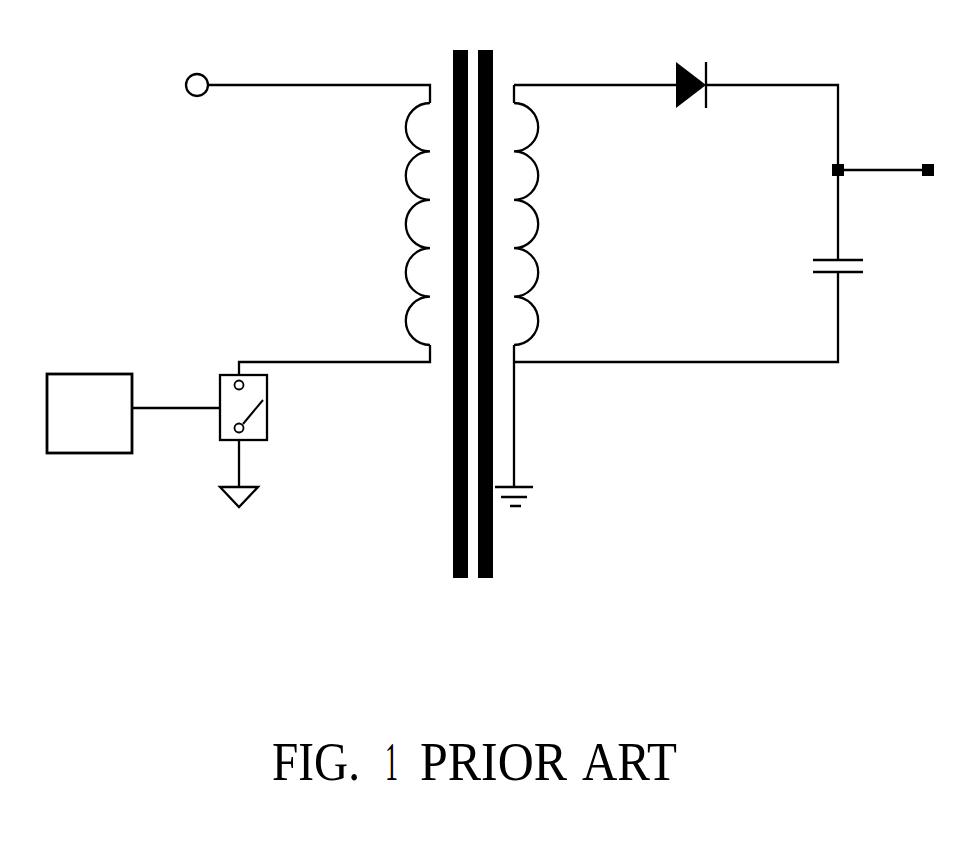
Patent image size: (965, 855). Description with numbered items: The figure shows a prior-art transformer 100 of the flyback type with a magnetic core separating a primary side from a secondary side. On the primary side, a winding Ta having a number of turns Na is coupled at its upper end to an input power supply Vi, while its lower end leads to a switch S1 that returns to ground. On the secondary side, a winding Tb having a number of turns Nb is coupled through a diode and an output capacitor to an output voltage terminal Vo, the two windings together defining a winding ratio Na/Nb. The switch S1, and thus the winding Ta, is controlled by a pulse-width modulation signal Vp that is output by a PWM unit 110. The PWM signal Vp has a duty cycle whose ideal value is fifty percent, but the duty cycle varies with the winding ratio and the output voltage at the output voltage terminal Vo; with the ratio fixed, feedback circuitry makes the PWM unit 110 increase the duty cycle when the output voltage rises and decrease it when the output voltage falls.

The transformer 100 is at (496, 314).
The PWM unit 110 is at (89, 413).
The switch S1 is at (260, 407).
The winding Ta is at (389, 224).
The winding Tb is at (555, 224).
The input power supply Vi is at (196, 101).
The output voltage terminal Vo is at (889, 187).
The PWM signal Vp is at (176, 389).